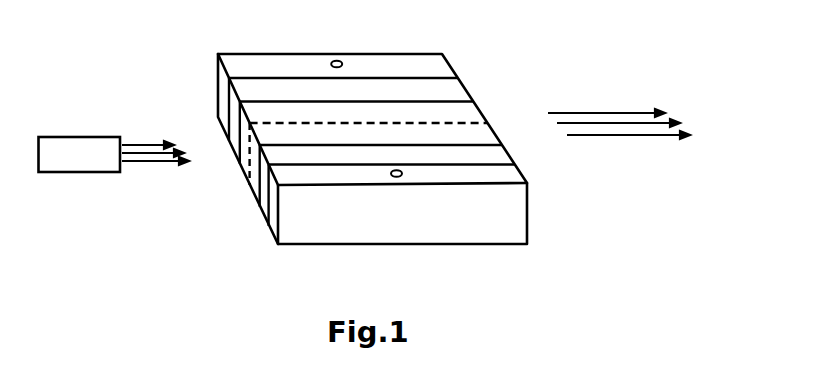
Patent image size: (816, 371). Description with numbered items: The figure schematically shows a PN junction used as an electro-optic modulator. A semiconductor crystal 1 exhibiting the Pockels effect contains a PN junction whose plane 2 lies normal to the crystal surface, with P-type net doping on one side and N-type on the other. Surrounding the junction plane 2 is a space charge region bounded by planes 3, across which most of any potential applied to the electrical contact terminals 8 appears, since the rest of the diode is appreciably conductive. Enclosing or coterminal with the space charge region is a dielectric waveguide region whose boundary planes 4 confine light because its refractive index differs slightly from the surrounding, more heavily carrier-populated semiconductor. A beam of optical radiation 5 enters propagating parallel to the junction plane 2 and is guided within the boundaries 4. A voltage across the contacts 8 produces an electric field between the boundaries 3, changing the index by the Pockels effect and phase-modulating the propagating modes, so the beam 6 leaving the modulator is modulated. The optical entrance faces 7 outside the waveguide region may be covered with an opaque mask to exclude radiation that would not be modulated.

The semiconductor crystal 1 is at (483, 235).
The PN junction plane 2 is at (480, 127).
The space charge region boundary planes 3 is at (453, 92).
The dielectric waveguide region boundary planes 4 is at (445, 68).
The beam of optical radiation 5 is at (152, 145).
The beam of optical radiation leaving the modulator 6 is at (628, 113).
The optical entrance faces 7 is at (222, 93).
The electrical contact terminals 8 is at (336, 60).